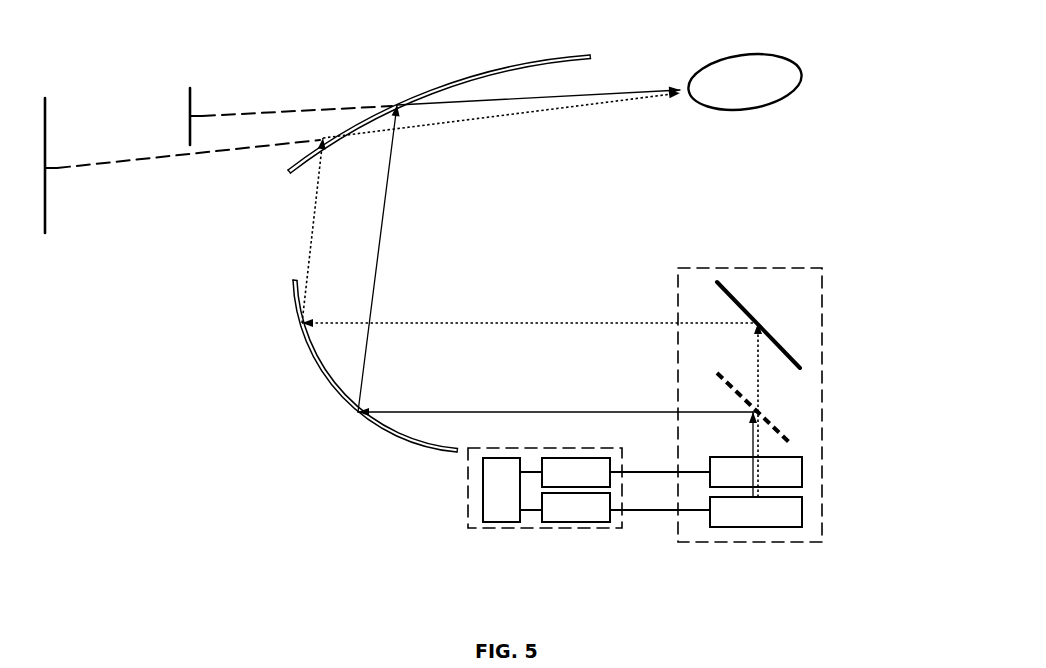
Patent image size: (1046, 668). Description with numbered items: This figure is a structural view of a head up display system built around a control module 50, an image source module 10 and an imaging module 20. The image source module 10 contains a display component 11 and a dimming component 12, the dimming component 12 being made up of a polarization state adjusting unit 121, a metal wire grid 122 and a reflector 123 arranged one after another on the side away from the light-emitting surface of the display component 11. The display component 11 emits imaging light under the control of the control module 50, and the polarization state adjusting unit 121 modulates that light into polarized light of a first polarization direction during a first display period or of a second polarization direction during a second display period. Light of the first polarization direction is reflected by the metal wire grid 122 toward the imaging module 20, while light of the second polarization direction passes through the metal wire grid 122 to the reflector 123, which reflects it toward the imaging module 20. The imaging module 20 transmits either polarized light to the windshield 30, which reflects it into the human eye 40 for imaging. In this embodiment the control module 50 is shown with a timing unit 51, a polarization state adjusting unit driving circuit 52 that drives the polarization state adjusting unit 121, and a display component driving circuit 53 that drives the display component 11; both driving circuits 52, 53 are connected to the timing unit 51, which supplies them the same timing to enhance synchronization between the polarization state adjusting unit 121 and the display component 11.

The image source module 10 is at (820, 405).
The display component 11 is at (813, 512).
The dimming component 12 is at (798, 405).
The polarization state adjusting unit 121 is at (791, 472).
The metal wire grid 122 is at (792, 445).
The reflector 123 is at (800, 368).
The imaging module 20 is at (313, 372).
The windshield 30 is at (475, 73).
The human eye 40 is at (803, 72).
The control module 50 is at (510, 503).
The timing unit 51 is at (500, 522).
The polarization state adjusting unit driving circuit 52 is at (580, 458).
The display component driving circuit 53 is at (578, 522).